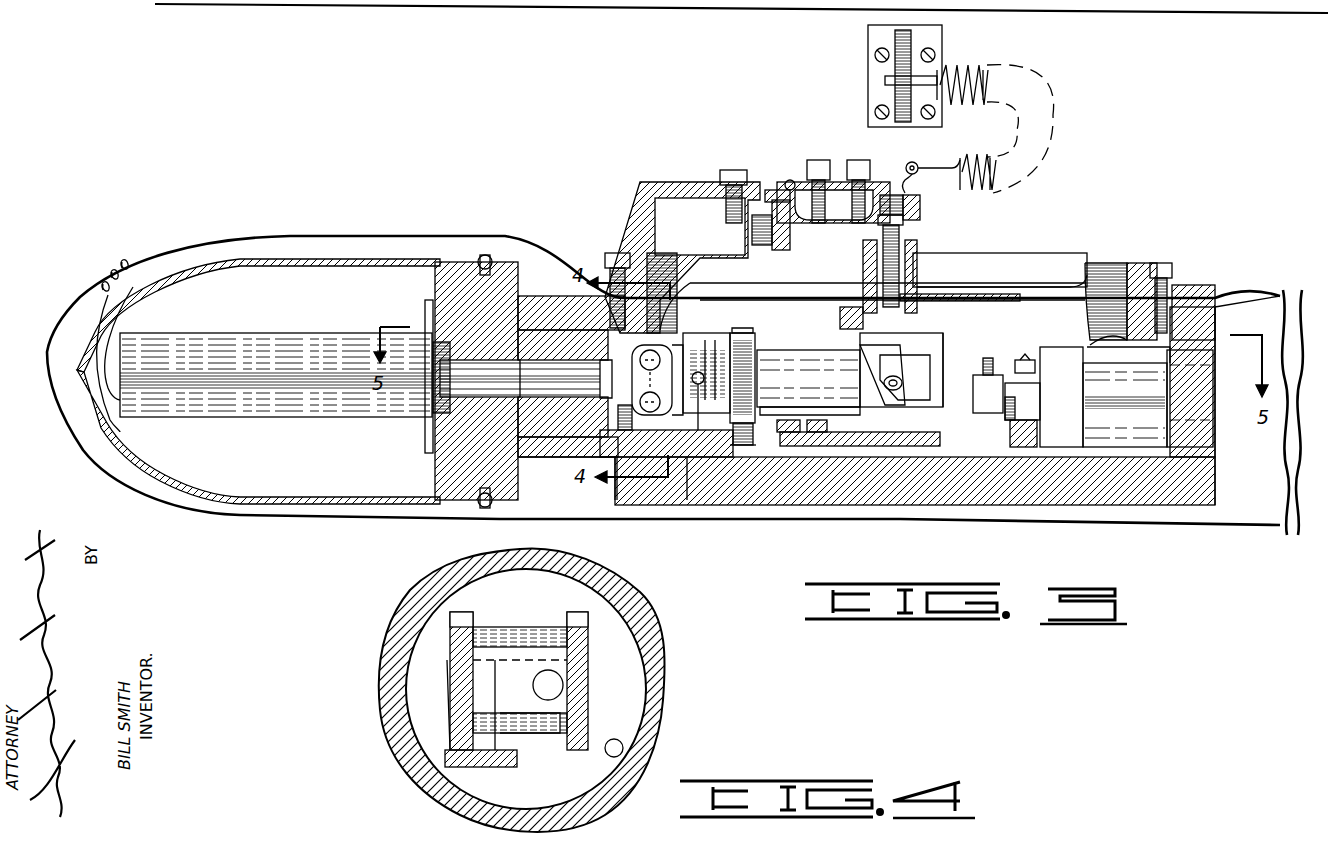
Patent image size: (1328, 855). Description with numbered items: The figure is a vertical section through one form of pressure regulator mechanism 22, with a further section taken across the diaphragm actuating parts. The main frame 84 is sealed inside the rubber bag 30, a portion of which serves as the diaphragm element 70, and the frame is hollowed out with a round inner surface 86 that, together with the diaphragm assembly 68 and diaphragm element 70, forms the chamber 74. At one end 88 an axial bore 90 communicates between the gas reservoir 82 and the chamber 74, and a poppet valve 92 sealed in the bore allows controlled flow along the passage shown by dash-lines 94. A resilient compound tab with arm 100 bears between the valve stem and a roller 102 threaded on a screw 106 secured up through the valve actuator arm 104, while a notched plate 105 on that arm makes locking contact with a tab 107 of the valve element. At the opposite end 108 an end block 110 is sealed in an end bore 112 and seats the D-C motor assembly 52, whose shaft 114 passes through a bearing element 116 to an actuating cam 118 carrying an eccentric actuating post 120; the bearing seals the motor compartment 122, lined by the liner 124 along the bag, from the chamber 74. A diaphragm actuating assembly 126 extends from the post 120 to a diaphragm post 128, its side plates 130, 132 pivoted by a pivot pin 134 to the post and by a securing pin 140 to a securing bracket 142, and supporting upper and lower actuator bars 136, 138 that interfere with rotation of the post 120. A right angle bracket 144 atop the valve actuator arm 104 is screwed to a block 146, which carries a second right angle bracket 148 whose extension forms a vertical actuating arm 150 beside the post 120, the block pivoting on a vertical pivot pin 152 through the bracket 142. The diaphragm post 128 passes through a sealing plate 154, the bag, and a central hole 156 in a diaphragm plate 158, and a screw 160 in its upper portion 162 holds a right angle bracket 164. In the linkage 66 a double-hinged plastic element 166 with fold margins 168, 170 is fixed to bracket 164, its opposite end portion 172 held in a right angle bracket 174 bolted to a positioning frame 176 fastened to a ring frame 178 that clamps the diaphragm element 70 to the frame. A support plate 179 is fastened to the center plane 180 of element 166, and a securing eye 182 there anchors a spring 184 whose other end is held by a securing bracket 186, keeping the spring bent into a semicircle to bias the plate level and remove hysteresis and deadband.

In FIG. 3, the actuator assembly 22 is at (603, 205).
In FIG. 3, the rubber bag 30 is at (214, 242).
In FIG. 3, the D-C motor assembly 52 is at (240, 391).
In FIG. 3, the linkage 66 is at (957, 215).
In FIG. 3, the diaphragm assembly 68 is at (845, 321).
In FIG. 3, the diaphragm element 70 is at (697, 289).
In FIG. 3, the chamber 74 is at (983, 341).
In FIG. 3, the gas reservoir 82 is at (1231, 474).
In FIG. 3, the main frame 84 is at (548, 297).
In FIG. 4, the main frame 84 is at (642, 722).
In FIG. 3, the round inner surface 86 is at (1152, 276).
In FIG. 3, the end 88 is at (1195, 304).
In FIG. 3, the axial bore 90 is at (1167, 357).
In FIG. 3, the poppet valve 92 is at (1115, 388).
In FIG. 3, the passage 94 is at (1190, 381).
In FIG. 3, the arm of resilient compound tab 100 is at (1012, 398).
In FIG. 3, the roller 102 is at (980, 393).
In FIG. 3, the valve actuator arm 104 is at (920, 438).
In FIG. 3, the notched plate 105 is at (1010, 420).
In FIG. 3, the screw 106 is at (993, 364).
In FIG. 3, the tab 107 is at (1037, 445).
In FIG. 3, the opposite end 108 is at (532, 462).
In FIG. 3, the end block 110 is at (457, 278).
In FIG. 3, the end bore 112 is at (520, 335).
In FIG. 4, the end bore 112 is at (622, 748).
In FIG. 3, the shaft 114 is at (504, 391).
In FIG. 3, the bearing element 116 is at (598, 398).
In FIG. 3, the actuating cam 118 is at (610, 432).
In FIG. 4, the actuating cam 118 is at (585, 660).
In FIG. 3, the eccentric actuating post 120 is at (617, 377).
In FIG. 4, the eccentric actuating post 120 is at (550, 690).
In FIG. 3, the motor compartment 122 is at (272, 294).
In FIG. 3, the liner 124 is at (365, 259).
In FIG. 3, the diaphragm actuating assembly 126 is at (768, 344).
In FIG. 3, the diaphragm post 128 is at (915, 352).
In FIG. 3, the side plate 130 is at (800, 386).
In FIG. 4, the side plate 130 is at (583, 648).
In FIG. 3, the side plate 132 is at (883, 397).
In FIG. 4, the side plate 132 is at (455, 648).
In FIG. 3, the pivot pin 134 is at (893, 380).
In FIG. 3, the upper actuator bar 136 is at (662, 262).
In FIG. 4, the upper actuator bar 136 is at (483, 630).
In FIG. 3, the lower actuator bar 138 is at (645, 430).
In FIG. 4, the lower actuator bar 138 is at (560, 735).
In FIG. 3, the securing pin 140 is at (695, 395).
In FIG. 3, the securing bracket 142 is at (703, 342).
In FIG. 3, the right angle bracket 144 is at (770, 406).
In FIG. 3, the block 146 is at (810, 398).
In FIG. 3, the right angle bracket 148 is at (647, 480).
In FIG. 4, the right angle bracket 148 is at (475, 766).
In FIG. 3, the vertical actuating arm 150 is at (625, 498).
In FIG. 4, the vertical actuating arm 150 is at (470, 692).
In FIG. 3, the vertical pivot pin 152 is at (747, 448).
In FIG. 3, the sealing plate 154 is at (995, 312).
In FIG. 3, the central hole 156 is at (917, 281).
In FIG. 3, the diaphragm plate 158 is at (975, 296).
In FIG. 3, the screw 160 is at (915, 238).
In FIG. 3, the upper portion 162 is at (915, 256).
In FIG. 3, the right angle bracket 164 is at (922, 207).
In FIG. 3, the double-hinged plastic element 166 is at (786, 182).
In FIG. 3, the fold margin 168 is at (906, 193).
In FIG. 3, the fold margin 170 is at (785, 190).
In FIG. 3, the opposite end portion 172 is at (790, 228).
In FIG. 3, the right angle bracket 174 is at (752, 224).
In FIG. 3, the positioning frame 176 is at (703, 184).
In FIG. 3, the ring frame 178 is at (655, 257).
In FIG. 3, the support plate 179 is at (812, 186).
In FIG. 3, the center plane 180 is at (835, 186).
In FIG. 3, the securing eye 182 is at (908, 165).
In FIG. 3, the spring 184 is at (1022, 136).
In FIG. 3, the securing bracket 186 is at (868, 73).